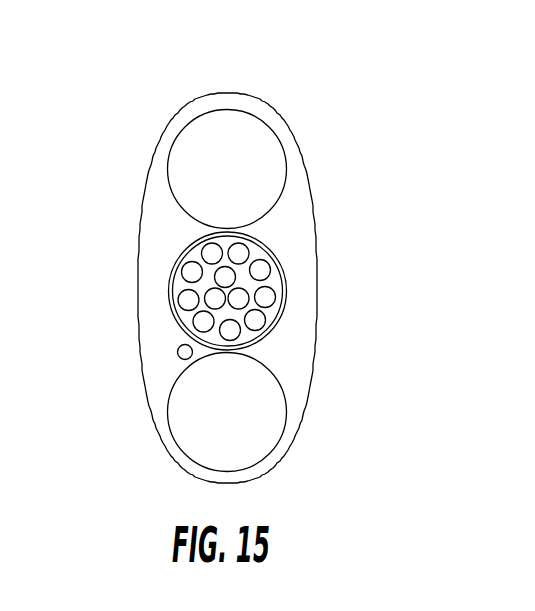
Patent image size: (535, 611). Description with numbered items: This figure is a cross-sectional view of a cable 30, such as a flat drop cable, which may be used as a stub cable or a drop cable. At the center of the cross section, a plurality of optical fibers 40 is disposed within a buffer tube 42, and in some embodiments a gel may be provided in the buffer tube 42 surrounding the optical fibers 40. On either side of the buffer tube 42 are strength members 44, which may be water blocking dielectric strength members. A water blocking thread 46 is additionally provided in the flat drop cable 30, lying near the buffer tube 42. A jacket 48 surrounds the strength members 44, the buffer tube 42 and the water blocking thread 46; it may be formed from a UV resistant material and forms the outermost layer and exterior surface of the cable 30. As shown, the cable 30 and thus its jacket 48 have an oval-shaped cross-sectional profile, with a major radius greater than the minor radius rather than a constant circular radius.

The cable 30 is at (357, 87).
The optical fibers 40 is at (190, 303).
The buffer tube 42 is at (184, 250).
The strength members 44 is at (218, 165).
The water blocking thread 46 is at (185, 352).
The jacket 48 is at (181, 109).